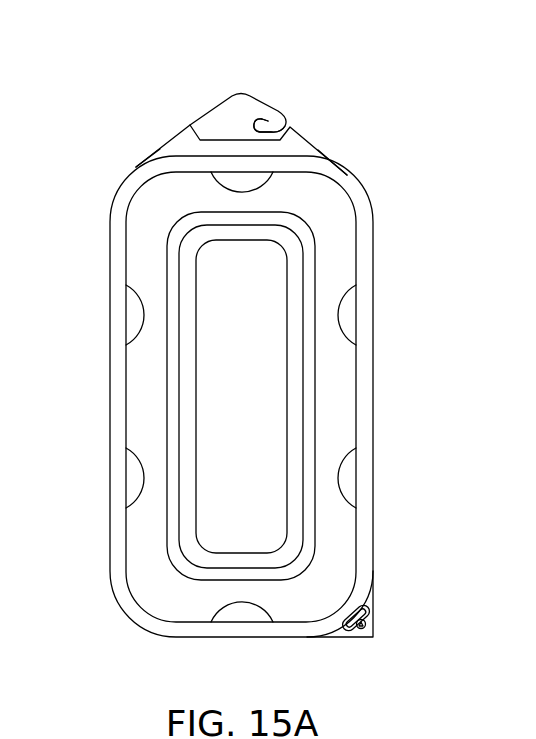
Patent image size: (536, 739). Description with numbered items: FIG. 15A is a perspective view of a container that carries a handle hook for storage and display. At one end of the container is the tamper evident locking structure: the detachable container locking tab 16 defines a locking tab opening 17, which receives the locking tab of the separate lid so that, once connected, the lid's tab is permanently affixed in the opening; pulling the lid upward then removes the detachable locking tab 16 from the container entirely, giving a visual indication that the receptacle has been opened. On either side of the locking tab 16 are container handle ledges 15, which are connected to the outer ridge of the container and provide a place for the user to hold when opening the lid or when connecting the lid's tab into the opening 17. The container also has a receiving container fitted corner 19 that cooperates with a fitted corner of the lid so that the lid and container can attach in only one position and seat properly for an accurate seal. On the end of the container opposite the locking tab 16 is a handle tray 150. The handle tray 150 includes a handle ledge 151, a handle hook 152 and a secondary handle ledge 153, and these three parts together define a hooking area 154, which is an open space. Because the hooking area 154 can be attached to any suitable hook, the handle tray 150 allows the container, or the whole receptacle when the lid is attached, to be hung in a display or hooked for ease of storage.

The handle tray 150 is at (266, 88).
The handle ledge 151 is at (318, 150).
The handle hook 152 is at (213, 110).
The secondary handle ledge 153 is at (160, 149).
The hooking area 154 is at (293, 125).
The container handle ledges 15 is at (372, 600).
The detachable container locking tab 16 is at (358, 633).
The locking tab opening 17 is at (371, 626).
The receiving container fitted corner 19 is at (357, 562).